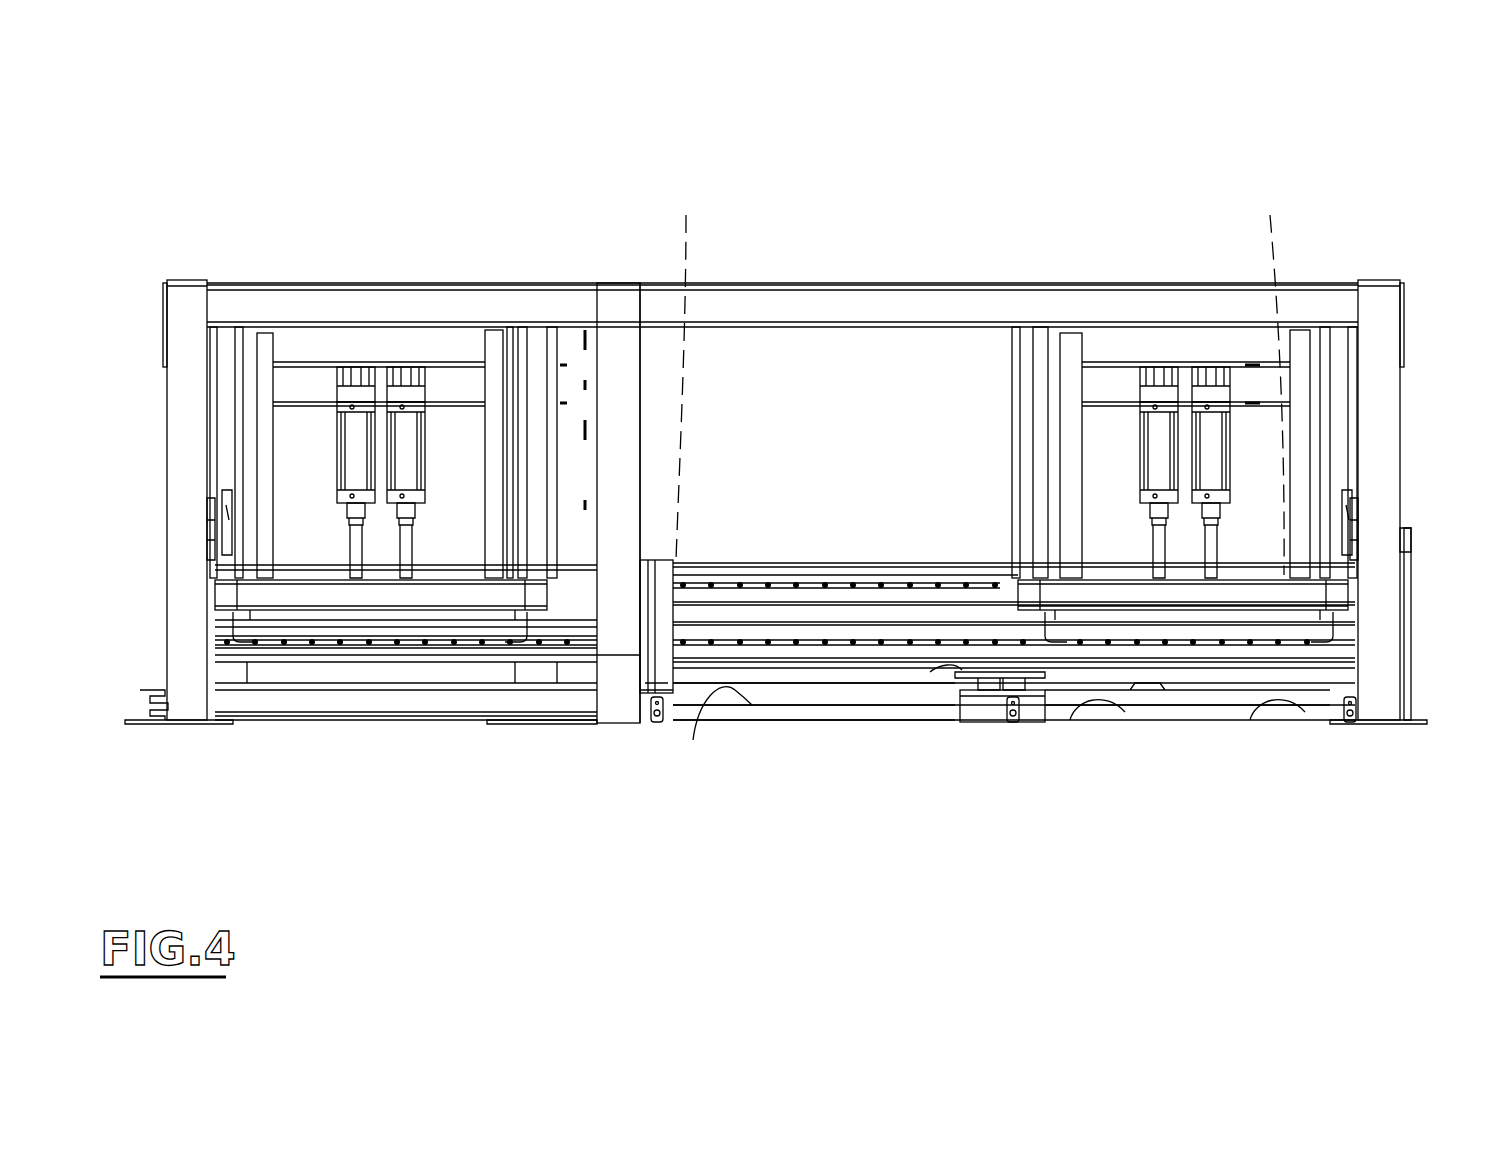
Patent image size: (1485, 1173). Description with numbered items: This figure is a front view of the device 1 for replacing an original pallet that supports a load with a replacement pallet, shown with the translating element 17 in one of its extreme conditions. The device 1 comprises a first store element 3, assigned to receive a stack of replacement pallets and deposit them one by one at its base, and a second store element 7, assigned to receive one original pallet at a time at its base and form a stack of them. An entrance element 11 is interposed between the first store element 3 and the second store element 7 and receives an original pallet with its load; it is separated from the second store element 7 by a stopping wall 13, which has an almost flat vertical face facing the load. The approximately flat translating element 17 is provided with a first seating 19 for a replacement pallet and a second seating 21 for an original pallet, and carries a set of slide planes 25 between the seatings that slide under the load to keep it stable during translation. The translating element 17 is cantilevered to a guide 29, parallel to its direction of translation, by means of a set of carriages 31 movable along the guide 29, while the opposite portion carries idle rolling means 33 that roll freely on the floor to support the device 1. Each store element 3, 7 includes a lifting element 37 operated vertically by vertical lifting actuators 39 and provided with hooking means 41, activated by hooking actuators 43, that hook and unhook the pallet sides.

The device 1 is at (262, 143).
The first store element 3 is at (1200, 342).
The second store element 7 is at (383, 342).
The entrance element 11 is at (818, 342).
The stopping wall 13 is at (645, 468).
The translating element 17 is at (968, 722).
The first seating 19 is at (1092, 714).
The second seating 21 is at (697, 740).
The slide planes 25 is at (960, 672).
The guide 29 is at (787, 585).
The carriages 31 is at (980, 371).
The idle rolling means 33 is at (657, 726).
The lifting element 37 is at (405, 450).
The vertical lifting actuators 39 is at (237, 575).
The hooking means 41 is at (242, 634).
The hooking actuators 43 is at (210, 509).